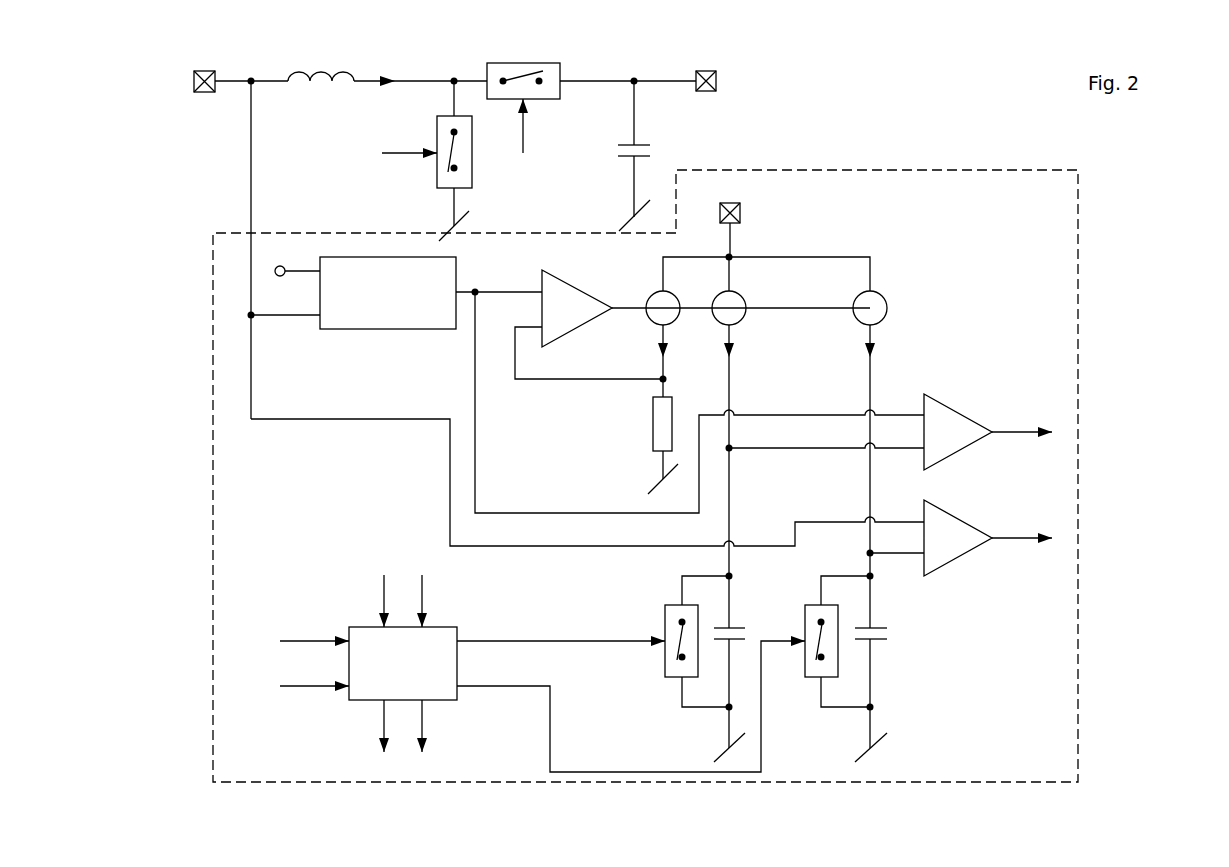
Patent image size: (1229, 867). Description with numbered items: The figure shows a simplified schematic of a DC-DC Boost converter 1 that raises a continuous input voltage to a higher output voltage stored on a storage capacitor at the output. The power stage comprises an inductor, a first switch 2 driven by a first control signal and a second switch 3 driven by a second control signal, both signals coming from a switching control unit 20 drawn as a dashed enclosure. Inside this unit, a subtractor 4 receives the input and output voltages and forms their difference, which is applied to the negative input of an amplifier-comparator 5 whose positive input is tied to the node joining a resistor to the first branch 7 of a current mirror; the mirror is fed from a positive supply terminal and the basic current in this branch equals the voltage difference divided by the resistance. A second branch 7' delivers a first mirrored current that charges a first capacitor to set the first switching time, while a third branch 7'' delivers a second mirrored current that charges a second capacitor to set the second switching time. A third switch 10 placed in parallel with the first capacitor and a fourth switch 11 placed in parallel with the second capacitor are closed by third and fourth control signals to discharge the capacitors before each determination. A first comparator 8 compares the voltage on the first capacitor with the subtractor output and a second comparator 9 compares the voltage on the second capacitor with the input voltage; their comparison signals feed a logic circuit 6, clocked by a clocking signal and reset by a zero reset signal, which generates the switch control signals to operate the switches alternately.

The DC-DC Boost converter 1 is at (757, 55).
The first switch 2 is at (465, 177).
The second switch 3 is at (517, 67).
The subtractor 4 is at (360, 322).
The amplifier-comparator 5 is at (567, 289).
The logic circuit 6 is at (452, 665).
The first branch of current mirror 7 is at (680, 318).
The second branch of current mirror 7' is at (737, 415).
The third branch of current mirror 7'' is at (808, 416).
The first comparator 8 is at (946, 409).
The second comparator 9 is at (946, 515).
The third switch 10 is at (673, 612).
The fourth switch 11 is at (812, 612).
The switching control unit 20 is at (995, 177).